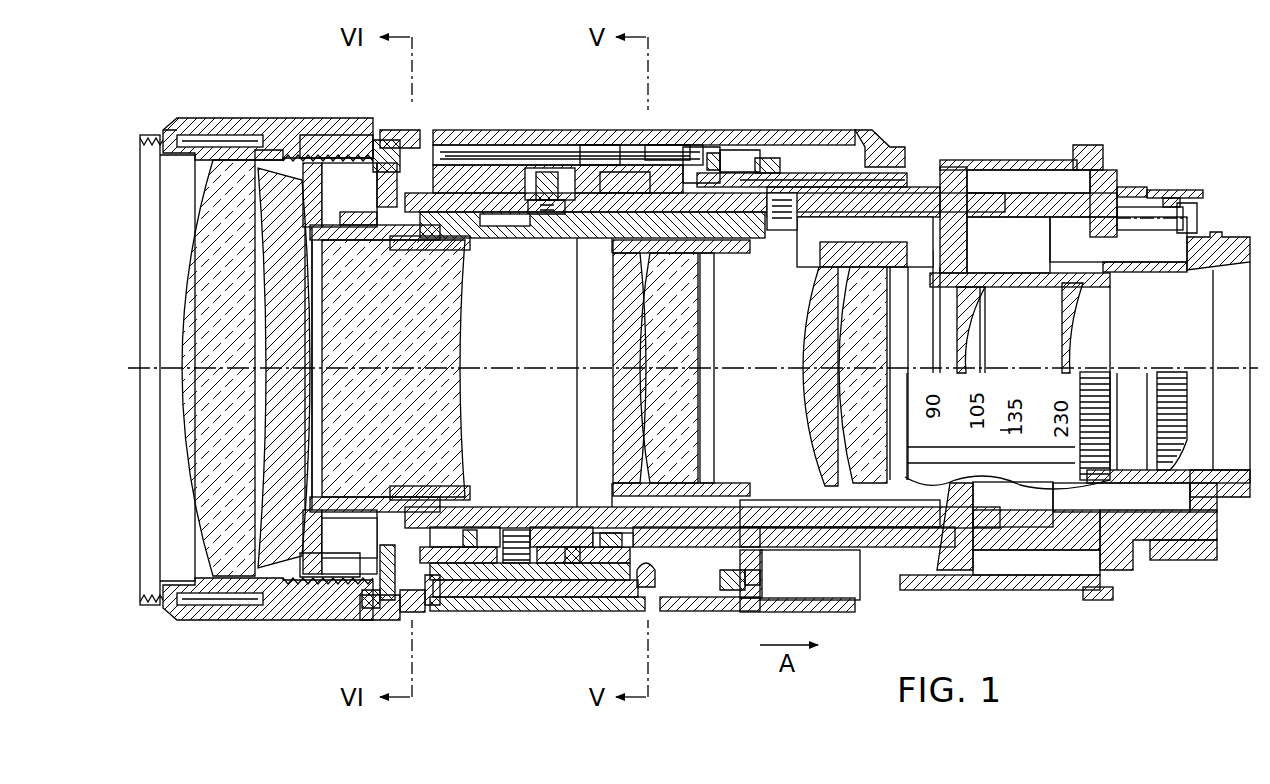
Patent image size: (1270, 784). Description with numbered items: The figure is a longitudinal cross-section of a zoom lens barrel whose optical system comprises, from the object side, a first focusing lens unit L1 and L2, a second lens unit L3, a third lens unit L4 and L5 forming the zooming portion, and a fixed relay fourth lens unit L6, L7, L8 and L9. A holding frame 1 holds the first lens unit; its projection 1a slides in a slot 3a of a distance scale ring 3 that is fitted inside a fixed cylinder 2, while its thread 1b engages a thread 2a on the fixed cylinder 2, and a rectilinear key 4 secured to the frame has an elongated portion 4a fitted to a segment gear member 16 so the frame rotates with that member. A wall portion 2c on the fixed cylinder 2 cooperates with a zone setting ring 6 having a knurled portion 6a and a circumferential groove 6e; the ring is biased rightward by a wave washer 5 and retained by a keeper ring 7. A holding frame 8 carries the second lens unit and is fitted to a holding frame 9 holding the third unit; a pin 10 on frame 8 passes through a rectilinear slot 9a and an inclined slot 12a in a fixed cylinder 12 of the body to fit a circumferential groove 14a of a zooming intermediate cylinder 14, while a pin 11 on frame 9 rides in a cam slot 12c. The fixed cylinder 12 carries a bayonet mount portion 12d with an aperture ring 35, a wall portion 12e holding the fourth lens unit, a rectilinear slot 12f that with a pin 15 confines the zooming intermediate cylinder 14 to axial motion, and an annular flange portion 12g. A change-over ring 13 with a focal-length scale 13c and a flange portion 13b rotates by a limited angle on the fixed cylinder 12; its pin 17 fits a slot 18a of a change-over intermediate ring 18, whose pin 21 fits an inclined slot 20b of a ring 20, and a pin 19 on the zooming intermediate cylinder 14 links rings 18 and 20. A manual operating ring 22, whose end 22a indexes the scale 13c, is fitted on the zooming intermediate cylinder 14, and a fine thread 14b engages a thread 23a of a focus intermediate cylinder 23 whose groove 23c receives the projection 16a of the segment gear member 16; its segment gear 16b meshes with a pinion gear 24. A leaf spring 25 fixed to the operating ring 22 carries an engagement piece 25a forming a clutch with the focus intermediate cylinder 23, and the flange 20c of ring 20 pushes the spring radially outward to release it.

The holding frame 1 is at (150, 135).
The projection 1a is at (266, 156).
The thread 1b is at (332, 163).
The fixed cylinder 2 is at (302, 132).
The thread 2a is at (322, 148).
The wall portion 2c is at (408, 148).
The distance scale ring 3 is at (236, 606).
The slot 3a is at (205, 138).
The rectilinear key 4 is at (374, 553).
The elongated portion 4a is at (400, 615).
The wave washer 5 is at (322, 600).
The zone setting ring 6 is at (378, 622).
The knurled portion 6a is at (372, 608).
The circumferential groove 6e is at (420, 612).
The keeper ring 7 is at (436, 606).
The holding frame 8 is at (436, 252).
The holding frame 9 is at (607, 218).
The rectilinear slot 9a is at (498, 230).
The pin 10 is at (556, 222).
The pin 11 is at (775, 226).
The fixed cylinder 12 is at (915, 198).
The slot 12a is at (594, 200).
The cam slot 12c is at (798, 205).
The bayonet mount portion 12d is at (1226, 233).
The wall portion 12e is at (958, 238).
The rectilinear slot 12f is at (742, 538).
The annular flange portion 12g is at (1115, 572).
The change-over ring 13 is at (985, 158).
The annular flange portion 13b is at (1097, 600).
The scale 13c is at (1013, 504).
The zooming intermediate cylinder 14 is at (556, 545).
The circumferential groove 14a is at (546, 222).
The fine thread 14b is at (658, 590).
The pin 15 is at (610, 540).
The segment gear member 16 is at (470, 185).
The projection 16a is at (618, 150).
The segment gear 16b is at (512, 590).
The pin 17 is at (910, 165).
The change-over intermediate ring 18 is at (776, 176).
The slot 18a is at (808, 180).
The pin 19 is at (766, 168).
The ring 20 is at (770, 582).
The inclined slot 20b is at (752, 588).
The flange 20c is at (702, 178).
The pin 21 is at (736, 592).
The manual operating ring 22 is at (652, 160).
The end 22a is at (913, 412).
The focus intermediate cylinder 23 is at (486, 150).
The thread 23a is at (640, 592).
The groove 23c is at (504, 158).
The pinion gear 24 is at (522, 566).
The leaf spring 25 is at (737, 152).
The engagement piece 25a is at (700, 150).
The aperture ring 35 is at (1170, 190).
The first lens unit lens L1 is at (218, 368).
The first lens unit lens L2 is at (284, 368).
The second lens unit L3 is at (393, 368).
The third lens unit lens L4 is at (612, 362).
The third lens unit lens L5 is at (677, 368).
The fourth lens unit lens L6 is at (812, 365).
The fourth lens unit lens L7 is at (974, 369).
The fourth lens unit lens L8 is at (968, 362).
The fourth lens unit lens L9 is at (1088, 362).